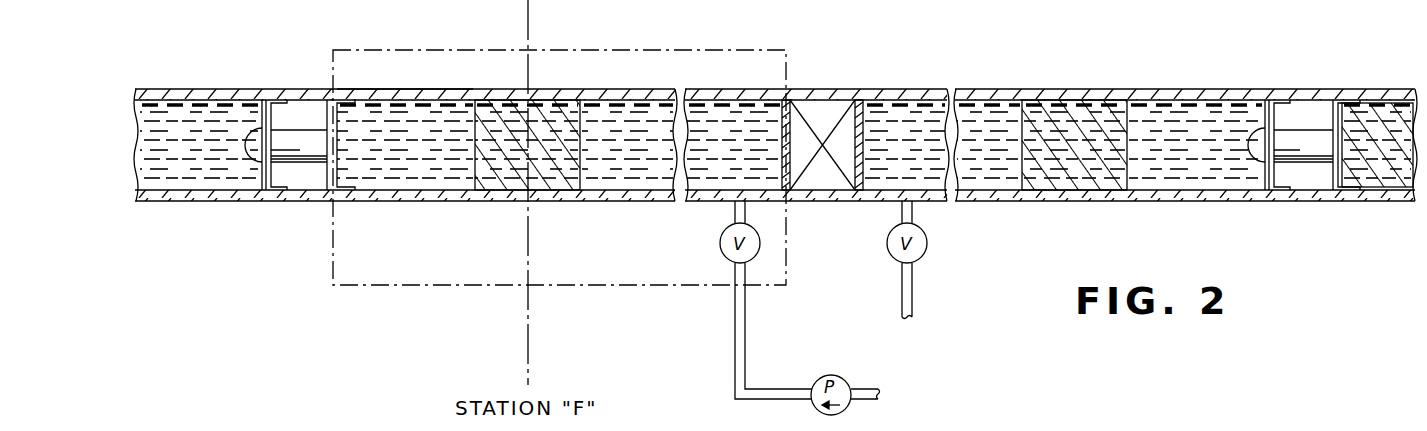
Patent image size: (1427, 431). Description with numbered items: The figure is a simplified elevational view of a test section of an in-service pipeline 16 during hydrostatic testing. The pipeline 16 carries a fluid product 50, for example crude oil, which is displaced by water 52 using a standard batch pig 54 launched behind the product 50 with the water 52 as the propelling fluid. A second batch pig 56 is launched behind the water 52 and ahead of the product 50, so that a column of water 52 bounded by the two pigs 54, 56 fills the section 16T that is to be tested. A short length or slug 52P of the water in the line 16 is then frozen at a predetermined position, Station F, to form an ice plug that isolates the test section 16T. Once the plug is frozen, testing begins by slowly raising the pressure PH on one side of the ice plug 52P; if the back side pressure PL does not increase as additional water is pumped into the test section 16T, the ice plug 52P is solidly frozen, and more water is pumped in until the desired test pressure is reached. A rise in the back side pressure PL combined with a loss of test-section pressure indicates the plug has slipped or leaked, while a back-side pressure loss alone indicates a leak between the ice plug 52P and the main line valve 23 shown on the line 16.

The pipeline 16 is at (368, 89).
The test section 16T is at (712, 50).
The main line valve 23 is at (823, 89).
The fluid product 50 is at (187, 103).
The water 52 is at (438, 162).
The ice plug 52P is at (553, 180).
The batch pig 54 is at (303, 163).
The second batch pig 56 is at (1303, 128).
The test side pressure PH is at (607, 105).
The back side pressure PL is at (385, 167).